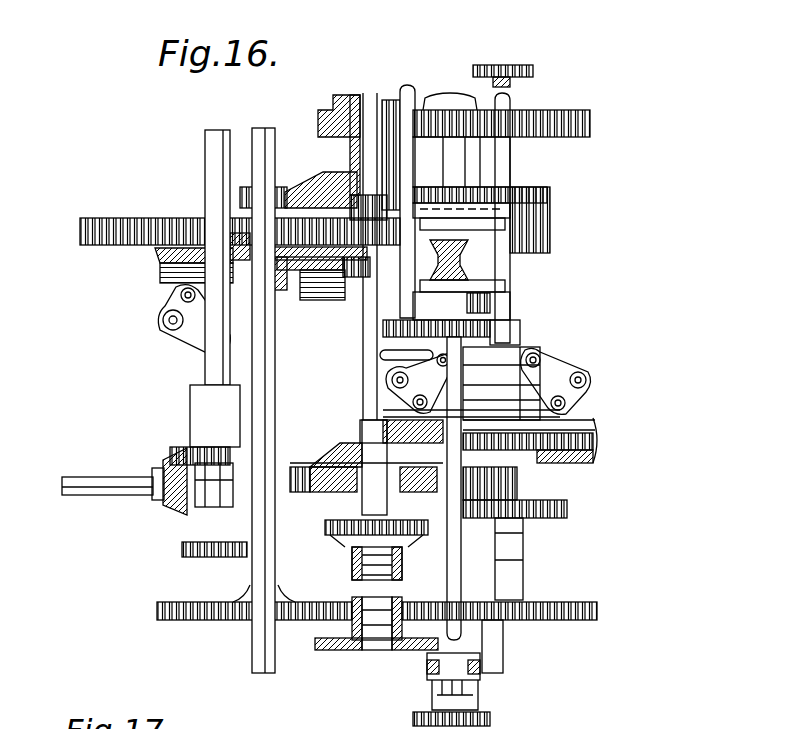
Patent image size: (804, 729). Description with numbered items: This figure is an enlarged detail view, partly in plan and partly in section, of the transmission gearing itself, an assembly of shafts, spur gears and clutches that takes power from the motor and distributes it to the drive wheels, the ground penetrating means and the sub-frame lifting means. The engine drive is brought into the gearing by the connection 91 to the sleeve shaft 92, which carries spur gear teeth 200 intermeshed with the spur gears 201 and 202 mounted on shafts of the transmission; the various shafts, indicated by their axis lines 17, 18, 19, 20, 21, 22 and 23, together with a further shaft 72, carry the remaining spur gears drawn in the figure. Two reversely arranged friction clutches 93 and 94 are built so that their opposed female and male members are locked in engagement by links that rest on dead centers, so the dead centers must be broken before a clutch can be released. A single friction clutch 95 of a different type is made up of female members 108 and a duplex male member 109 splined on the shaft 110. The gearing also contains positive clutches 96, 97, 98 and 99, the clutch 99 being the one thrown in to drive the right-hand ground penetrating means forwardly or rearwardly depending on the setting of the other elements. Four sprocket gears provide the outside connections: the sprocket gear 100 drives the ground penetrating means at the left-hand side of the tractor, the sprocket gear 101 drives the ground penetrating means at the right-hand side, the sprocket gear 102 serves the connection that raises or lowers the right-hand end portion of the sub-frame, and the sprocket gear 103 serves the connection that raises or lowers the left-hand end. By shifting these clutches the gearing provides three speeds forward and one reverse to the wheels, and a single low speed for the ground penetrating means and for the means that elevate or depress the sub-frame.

The shaft axis 17 is at (640, 627).
The shaft axis 18 is at (635, 587).
The shaft axis 19 is at (118, 504).
The shaft axis / rocker arm 20 is at (600, 342).
The shaft axis 21 is at (233, 247).
The gear 22 is at (233, 213).
The shaft axis 23 is at (638, 150).
The drive shaft with bevel gear 72 is at (80, 480).
The connection 91 is at (347, 650).
The sleeve shaft 92 is at (330, 628).
The friction clutch 93 is at (587, 462).
The friction clutch 94 is at (158, 268).
The friction clutch 95 is at (543, 242).
The positive clutch 96 is at (433, 700).
The positive clutch 97 is at (392, 583).
The positive clutch 98 is at (332, 512).
The positive clutch 99 is at (193, 505).
The sprocket gear 100 is at (490, 720).
The sprocket gear 101 is at (194, 550).
The sprocket gear 102 is at (527, 62).
The sprocket gear 103 is at (383, 355).
The female members 108 is at (543, 216).
The duplex male member 109 is at (543, 228).
The shaft 110 is at (452, 160).
The spur gear teeth 200 is at (357, 600).
The spur gear 201 is at (157, 605).
The spur gear 202 is at (597, 609).